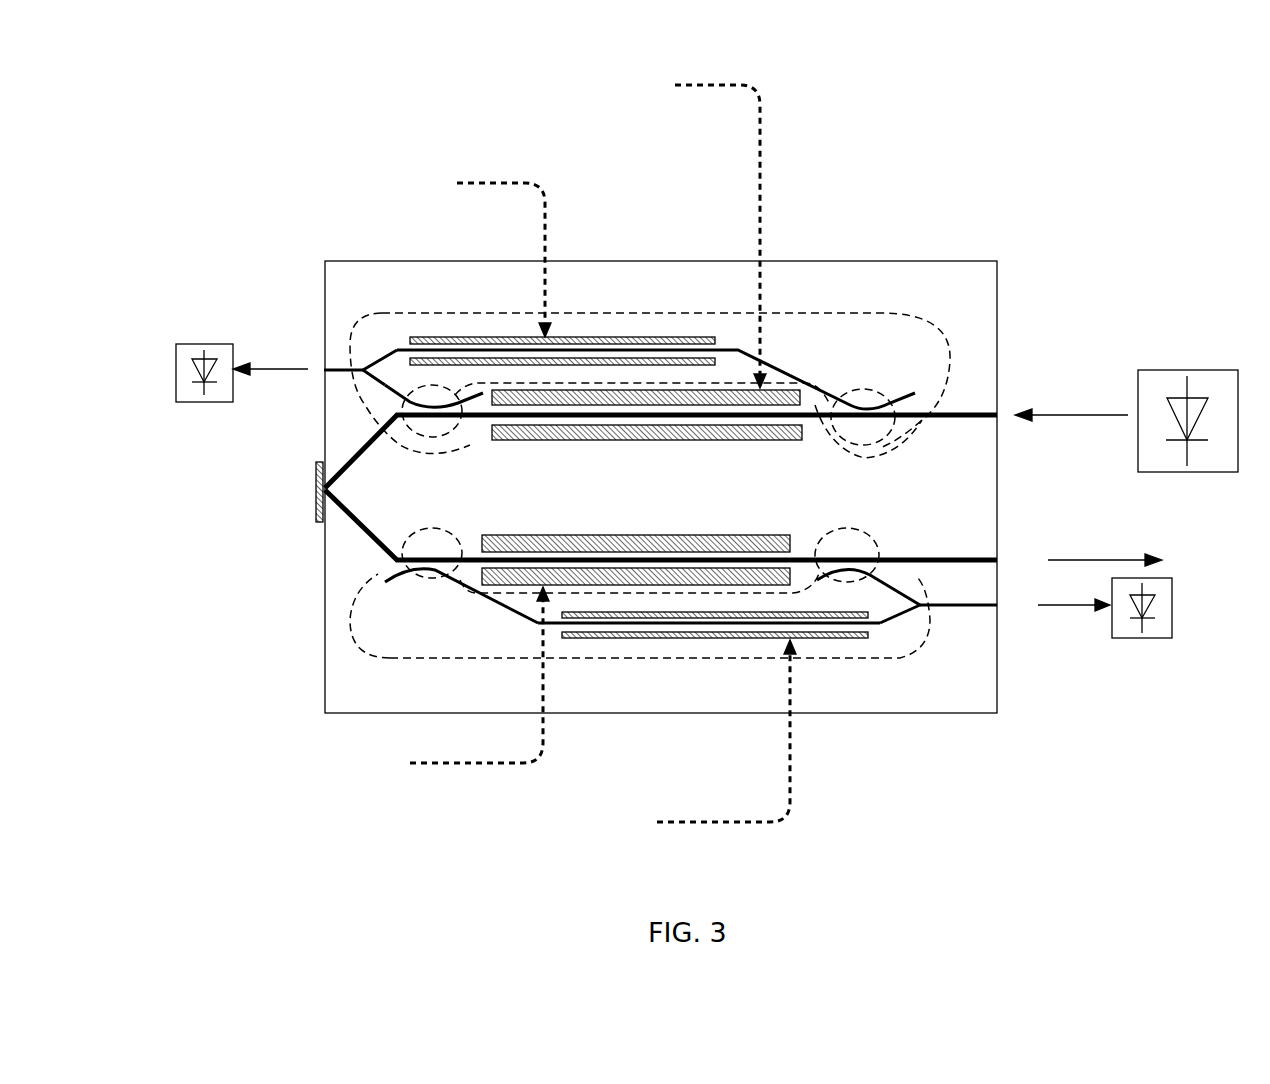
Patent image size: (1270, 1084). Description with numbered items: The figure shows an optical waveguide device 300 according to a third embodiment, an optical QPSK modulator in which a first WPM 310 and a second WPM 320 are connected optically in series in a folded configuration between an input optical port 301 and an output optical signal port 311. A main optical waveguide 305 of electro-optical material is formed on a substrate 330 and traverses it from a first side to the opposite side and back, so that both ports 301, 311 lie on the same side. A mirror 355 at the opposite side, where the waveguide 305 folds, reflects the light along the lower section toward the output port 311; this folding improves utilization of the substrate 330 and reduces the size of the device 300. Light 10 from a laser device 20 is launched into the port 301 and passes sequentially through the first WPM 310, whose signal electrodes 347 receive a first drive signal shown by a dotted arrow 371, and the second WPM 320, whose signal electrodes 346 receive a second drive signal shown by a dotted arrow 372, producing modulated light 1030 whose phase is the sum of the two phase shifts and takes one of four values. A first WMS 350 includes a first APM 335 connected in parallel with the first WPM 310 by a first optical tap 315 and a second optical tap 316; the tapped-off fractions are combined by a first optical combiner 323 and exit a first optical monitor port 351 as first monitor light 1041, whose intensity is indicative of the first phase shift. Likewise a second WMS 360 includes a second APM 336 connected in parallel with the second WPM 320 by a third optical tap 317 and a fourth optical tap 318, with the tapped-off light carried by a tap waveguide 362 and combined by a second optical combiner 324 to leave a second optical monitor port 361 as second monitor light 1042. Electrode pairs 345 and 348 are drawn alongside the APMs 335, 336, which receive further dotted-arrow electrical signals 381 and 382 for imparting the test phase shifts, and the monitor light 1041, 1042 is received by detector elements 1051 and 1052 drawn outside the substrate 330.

The optical waveguide device 300 is at (860, 262).
The substrate 330 is at (982, 293).
The input optical port 301 is at (1000, 414).
The main optical waveguide 305 is at (950, 557).
The output optical signal port 311 is at (998, 558).
The first optical monitor port 351 is at (323, 368).
The first optical combiner 323 is at (360, 350).
The second optical tap 316 is at (413, 430).
The first optical tap 315 is at (850, 390).
The third optical tap 317 is at (420, 578).
The fourth optical tap 318 is at (880, 557).
The second optical monitor port 361 is at (723, 348).
The waveguide arm 362 is at (540, 622).
The second optical combiner 324 is at (923, 603).
The first APM 335 is at (520, 318).
The second APM 336 is at (820, 658).
The tuning electrodes 345 is at (672, 337).
The signal electrodes 346 is at (477, 535).
The signal electrodes 347 is at (558, 442).
The tuning electrodes 348 is at (640, 640).
The first WMS 350 is at (650, 339).
The second WMS 360 is at (650, 672).
The first WPM 310 is at (676, 441).
The second WPM 320 is at (653, 541).
The mirror 355 is at (317, 520).
The first drive voltage line 371 is at (765, 160).
The second drive voltage line 372 is at (480, 765).
The first tuning voltage line 381 is at (550, 207).
The second tuning voltage line 382 is at (760, 823).
The light 10 is at (1062, 420).
The laser device 20 is at (1212, 472).
The modulated light 1030 is at (1125, 557).
The first monitor light 1041 is at (278, 369).
The second monitor light 1042 is at (1067, 608).
The photodetector 1051 is at (187, 403).
The photodetector 1052 is at (1162, 638).